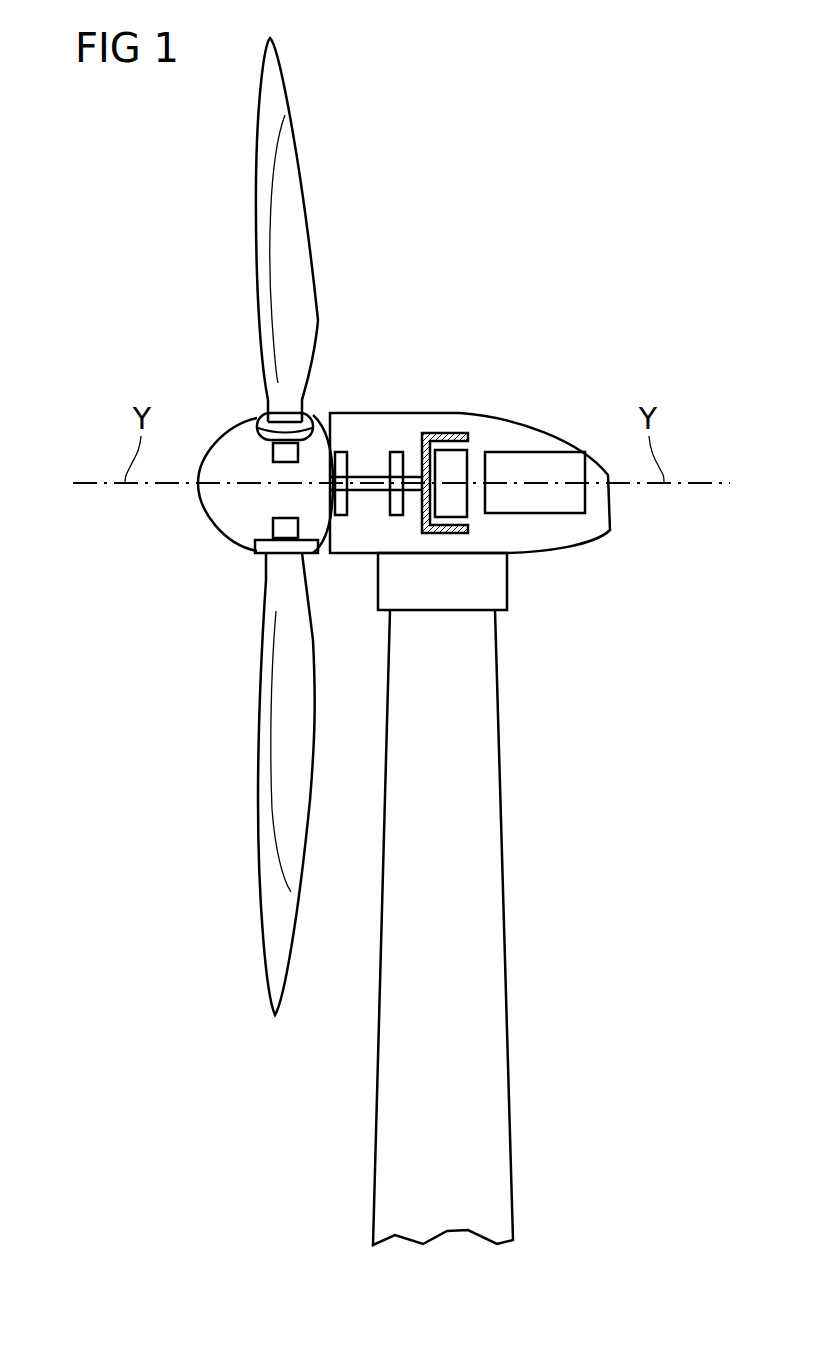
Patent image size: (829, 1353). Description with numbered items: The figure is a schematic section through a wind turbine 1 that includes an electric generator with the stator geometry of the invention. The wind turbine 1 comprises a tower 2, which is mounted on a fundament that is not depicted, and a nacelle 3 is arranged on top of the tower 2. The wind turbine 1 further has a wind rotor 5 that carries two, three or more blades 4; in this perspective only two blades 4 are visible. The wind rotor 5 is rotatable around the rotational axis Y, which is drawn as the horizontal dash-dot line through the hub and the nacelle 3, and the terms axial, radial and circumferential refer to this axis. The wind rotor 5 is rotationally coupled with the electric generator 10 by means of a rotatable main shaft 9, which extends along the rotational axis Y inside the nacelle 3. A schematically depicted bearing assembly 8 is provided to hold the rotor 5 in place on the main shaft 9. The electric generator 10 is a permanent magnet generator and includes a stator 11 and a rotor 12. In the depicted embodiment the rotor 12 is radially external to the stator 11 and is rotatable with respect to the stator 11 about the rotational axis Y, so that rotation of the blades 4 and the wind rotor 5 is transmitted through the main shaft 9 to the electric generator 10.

The wind turbine 1 is at (571, 276).
The tower 2 is at (490, 769).
The nacelle 3 is at (564, 419).
The blades 4 is at (258, 218).
The wind rotor 5 is at (191, 513).
The bearing assembly 8 is at (397, 452).
The rotatable main shaft 9 is at (373, 488).
The electric generator 10 is at (468, 420).
The stator 11 is at (458, 458).
The rotor 12 is at (435, 433).